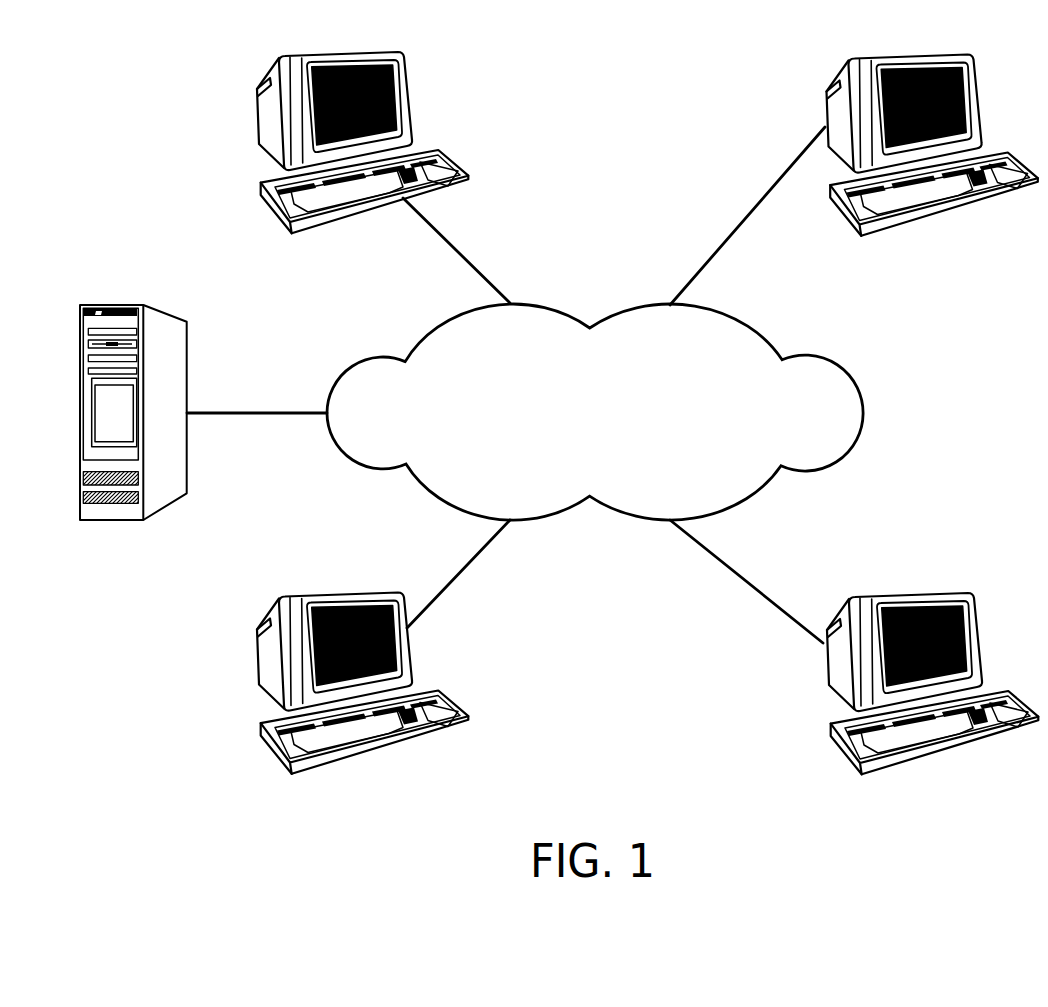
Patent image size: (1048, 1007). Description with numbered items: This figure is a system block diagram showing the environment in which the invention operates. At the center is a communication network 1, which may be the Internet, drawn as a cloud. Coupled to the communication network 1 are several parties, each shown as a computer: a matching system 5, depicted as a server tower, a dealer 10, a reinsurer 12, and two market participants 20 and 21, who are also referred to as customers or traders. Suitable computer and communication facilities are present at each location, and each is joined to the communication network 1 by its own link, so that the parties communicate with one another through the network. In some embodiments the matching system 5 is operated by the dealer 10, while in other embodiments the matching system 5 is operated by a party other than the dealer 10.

The communication network 1 is at (635, 518).
The matching system 5 is at (132, 520).
The dealer 10 is at (257, 115).
The reinsurer 12 is at (878, 53).
The market participant 20 is at (257, 637).
The market participant 21 is at (933, 593).